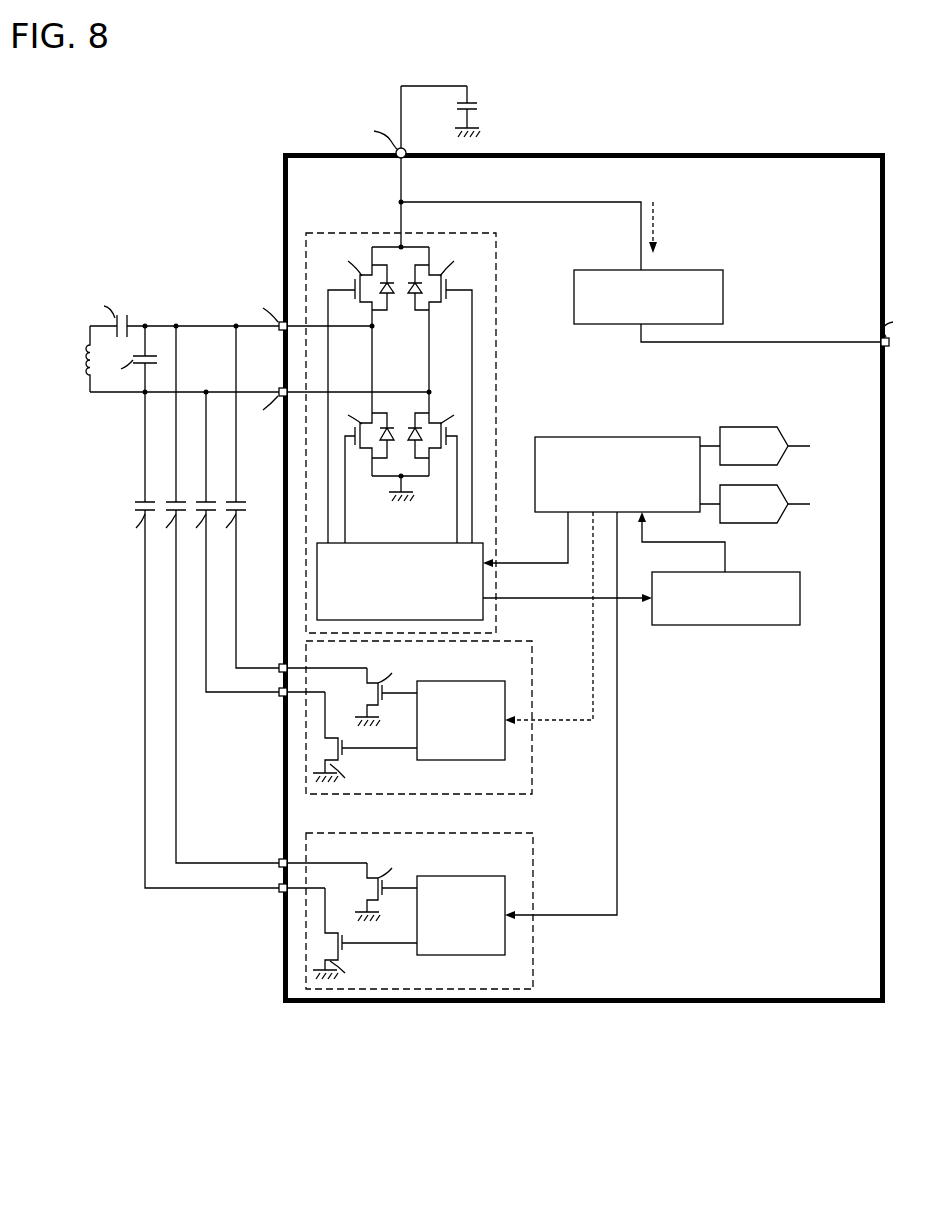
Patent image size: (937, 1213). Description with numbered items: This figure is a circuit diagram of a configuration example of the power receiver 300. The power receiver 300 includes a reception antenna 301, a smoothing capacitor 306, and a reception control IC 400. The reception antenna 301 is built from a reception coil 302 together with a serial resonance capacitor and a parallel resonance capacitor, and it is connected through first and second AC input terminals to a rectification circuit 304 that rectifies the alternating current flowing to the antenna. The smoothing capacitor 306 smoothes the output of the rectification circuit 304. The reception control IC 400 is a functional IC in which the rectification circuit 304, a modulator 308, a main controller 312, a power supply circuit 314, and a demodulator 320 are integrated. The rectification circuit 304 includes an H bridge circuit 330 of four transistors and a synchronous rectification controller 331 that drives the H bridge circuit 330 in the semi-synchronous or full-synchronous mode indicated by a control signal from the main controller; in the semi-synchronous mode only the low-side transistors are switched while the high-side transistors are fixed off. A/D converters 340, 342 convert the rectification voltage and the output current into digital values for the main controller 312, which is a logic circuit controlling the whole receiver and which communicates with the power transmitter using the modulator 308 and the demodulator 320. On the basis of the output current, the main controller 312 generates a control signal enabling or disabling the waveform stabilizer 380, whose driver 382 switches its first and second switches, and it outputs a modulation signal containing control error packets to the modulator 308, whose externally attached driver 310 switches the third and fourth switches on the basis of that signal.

The power receiver 300 is at (447, 1162).
The reception antenna 301 is at (233, 363).
The reception coil 302 is at (63, 359).
The rectification circuit 304 is at (497, 247).
The smoothing capacitor 306 is at (483, 108).
The modulator 308 is at (327, 657).
The driver 310 is at (470, 876).
The main controller 312 is at (660, 437).
The power supply circuit 314 is at (660, 270).
The demodulator 320 is at (740, 572).
The H bridge circuit 330 is at (352, 503).
The synchronous rectification controller 331 is at (483, 543).
The A/D converter 340 is at (779, 427).
The A/D converter 342 is at (779, 485).
The waveform stabilizer 380 is at (337, 560).
The driver 382 is at (470, 681).
The reception control IC 400 is at (845, 151).